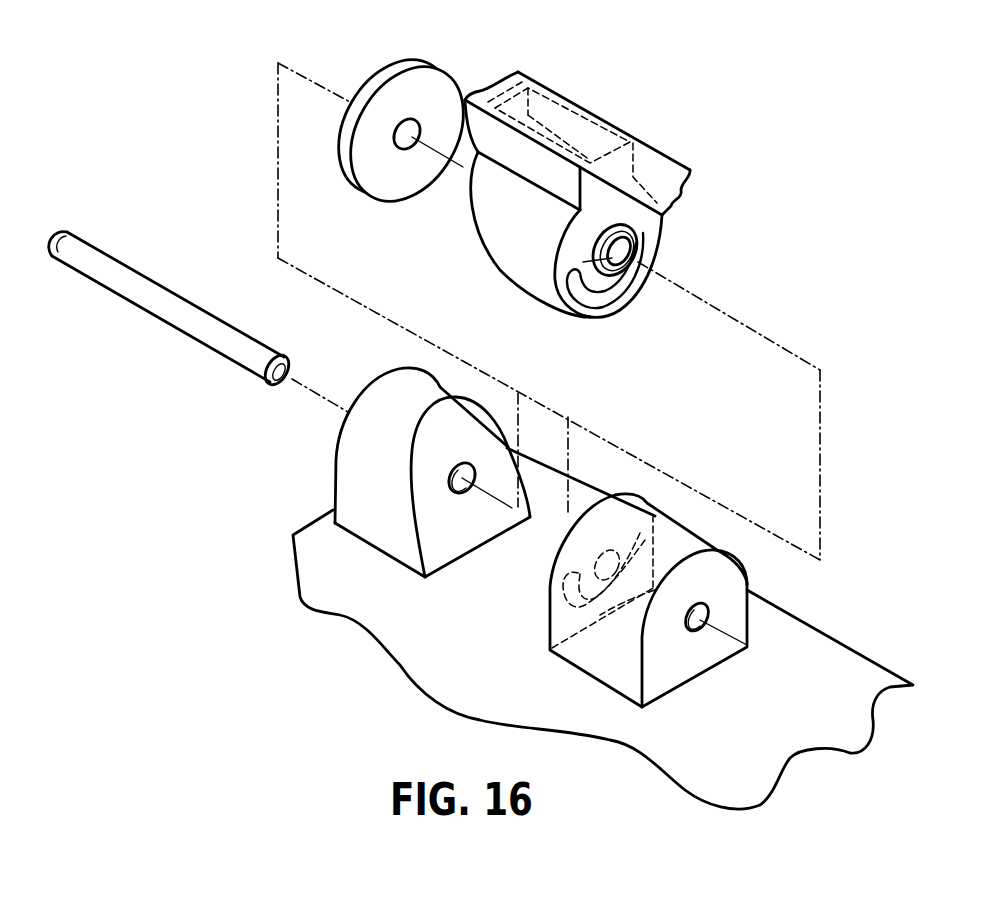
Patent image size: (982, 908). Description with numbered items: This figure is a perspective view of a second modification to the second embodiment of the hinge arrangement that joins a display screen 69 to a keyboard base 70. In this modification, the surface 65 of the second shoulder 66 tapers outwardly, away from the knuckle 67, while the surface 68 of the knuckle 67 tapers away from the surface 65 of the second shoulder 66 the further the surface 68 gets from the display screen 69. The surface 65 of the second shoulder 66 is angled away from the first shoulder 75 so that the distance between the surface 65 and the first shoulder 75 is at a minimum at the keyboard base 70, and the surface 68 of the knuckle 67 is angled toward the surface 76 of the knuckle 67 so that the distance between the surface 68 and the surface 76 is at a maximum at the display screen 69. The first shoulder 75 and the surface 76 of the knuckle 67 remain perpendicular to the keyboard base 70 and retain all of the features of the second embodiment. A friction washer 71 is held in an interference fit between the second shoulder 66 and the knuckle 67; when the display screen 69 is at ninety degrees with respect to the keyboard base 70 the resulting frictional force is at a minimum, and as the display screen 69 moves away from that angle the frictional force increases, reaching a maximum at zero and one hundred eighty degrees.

The surface 65 is at (477, 525).
The second shoulder 66 is at (350, 478).
The knuckle 67 is at (540, 117).
The surface 68 is at (483, 230).
The display screen 69 is at (667, 173).
The keyboard base 70 is at (790, 635).
The friction washer 71 is at (388, 75).
The first shoulder 75 is at (580, 652).
The surface 76 is at (607, 305).